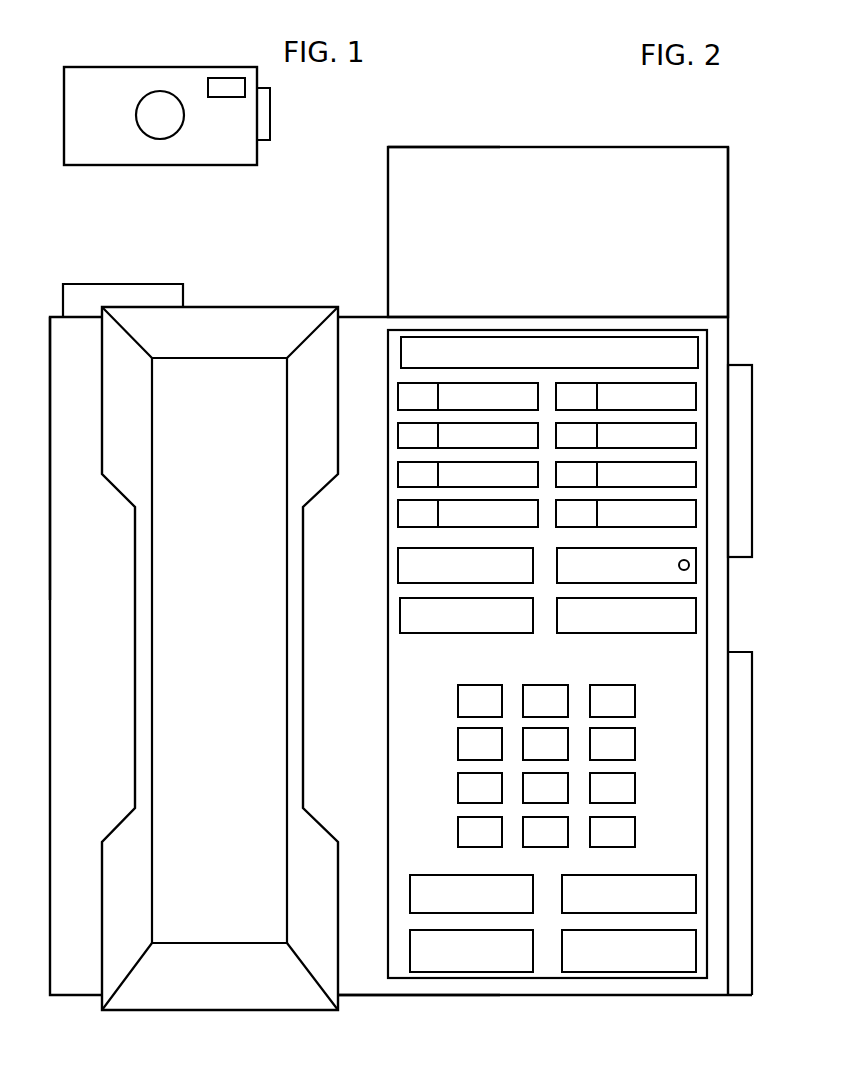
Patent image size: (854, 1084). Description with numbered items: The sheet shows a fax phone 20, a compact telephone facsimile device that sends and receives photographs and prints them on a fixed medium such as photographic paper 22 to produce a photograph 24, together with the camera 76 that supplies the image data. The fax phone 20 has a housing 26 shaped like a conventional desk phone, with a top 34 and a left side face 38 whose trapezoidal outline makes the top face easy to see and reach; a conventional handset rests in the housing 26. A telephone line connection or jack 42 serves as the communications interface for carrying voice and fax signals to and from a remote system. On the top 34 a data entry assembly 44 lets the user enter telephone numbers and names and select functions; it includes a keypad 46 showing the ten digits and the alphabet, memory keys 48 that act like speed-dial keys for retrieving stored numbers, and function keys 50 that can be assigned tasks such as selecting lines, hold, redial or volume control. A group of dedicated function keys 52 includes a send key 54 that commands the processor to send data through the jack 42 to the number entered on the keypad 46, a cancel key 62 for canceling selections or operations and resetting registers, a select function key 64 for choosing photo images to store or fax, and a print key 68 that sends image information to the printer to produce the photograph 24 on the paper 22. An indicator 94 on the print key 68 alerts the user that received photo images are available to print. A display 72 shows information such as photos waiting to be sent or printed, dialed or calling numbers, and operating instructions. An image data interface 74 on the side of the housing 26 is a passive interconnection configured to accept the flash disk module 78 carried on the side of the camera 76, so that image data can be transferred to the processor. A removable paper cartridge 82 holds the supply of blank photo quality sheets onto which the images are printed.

In FIG. 2, the fax phone 20 is at (284, 266).
In FIG. 2, the photographic paper 22 is at (565, 155).
In FIG. 2, the photograph 24 is at (450, 125).
In FIG. 2, the housing 26 is at (50, 330).
In FIG. 2, the top 34 is at (370, 322).
In FIG. 2, the left side face 38 is at (50, 430).
In FIG. 2, the telephone line connection or jack 42 is at (64, 284).
In FIG. 2, the data entry assembly 44 is at (460, 1008).
In FIG. 2, the keypad 46 is at (662, 782).
In FIG. 2, the memory keys 48 is at (50, 548).
In FIG. 2, the function keys 50 is at (644, 992).
In FIG. 2, the dedicated function keys 52 is at (766, 577).
In FIG. 2, the send key 54 is at (515, 560).
In FIG. 2, the cancel key 62 is at (525, 622).
In FIG. 2, the select function key 64 is at (690, 610).
In FIG. 2, the print key 68 is at (697, 577).
In FIG. 2, the display 72 is at (686, 348).
In FIG. 2, the image data interface 74 is at (733, 365).
In FIG. 1, the camera 76 is at (105, 67).
In FIG. 1, the flash disk module 78 is at (272, 115).
In FIG. 2, the paper cartridge 82 is at (743, 905).
In FIG. 2, the indicator 94 is at (686, 558).